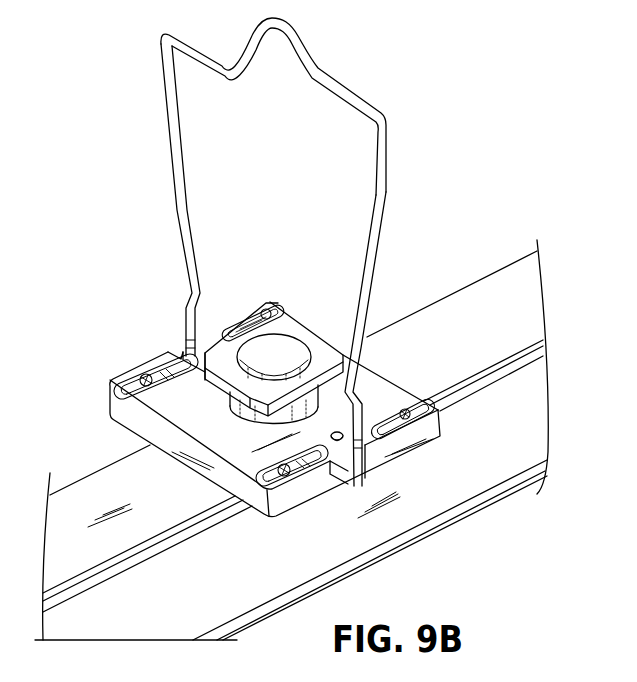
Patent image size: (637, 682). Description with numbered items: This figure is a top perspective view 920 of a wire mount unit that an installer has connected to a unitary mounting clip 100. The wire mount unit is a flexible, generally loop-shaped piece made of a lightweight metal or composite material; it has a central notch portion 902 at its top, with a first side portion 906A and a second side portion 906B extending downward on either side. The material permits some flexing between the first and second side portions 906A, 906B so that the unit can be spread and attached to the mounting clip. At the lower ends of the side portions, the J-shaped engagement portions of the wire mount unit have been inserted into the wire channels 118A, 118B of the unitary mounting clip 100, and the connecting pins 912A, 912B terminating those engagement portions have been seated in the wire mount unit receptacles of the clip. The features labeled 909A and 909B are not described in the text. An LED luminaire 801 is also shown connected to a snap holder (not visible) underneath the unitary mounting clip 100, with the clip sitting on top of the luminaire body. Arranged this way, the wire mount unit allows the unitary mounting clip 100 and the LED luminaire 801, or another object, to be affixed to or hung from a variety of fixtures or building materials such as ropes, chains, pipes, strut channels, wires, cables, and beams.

The top perspective view 920 is at (547, 83).
The central notch portion 902 is at (349, 74).
The first side portion 906A is at (172, 167).
The second side portion 906B is at (387, 181).
The unitary mounting clip 100 is at (100, 373).
The first strap channel 909A is at (175, 337).
The second strap channel 909B is at (523, 357).
The connecting pin 912A is at (220, 333).
The connecting pin 912B is at (336, 418).
The wire channel 118A is at (366, 422).
The wire channel 118B is at (206, 323).
The LED luminaire 801 is at (547, 421).